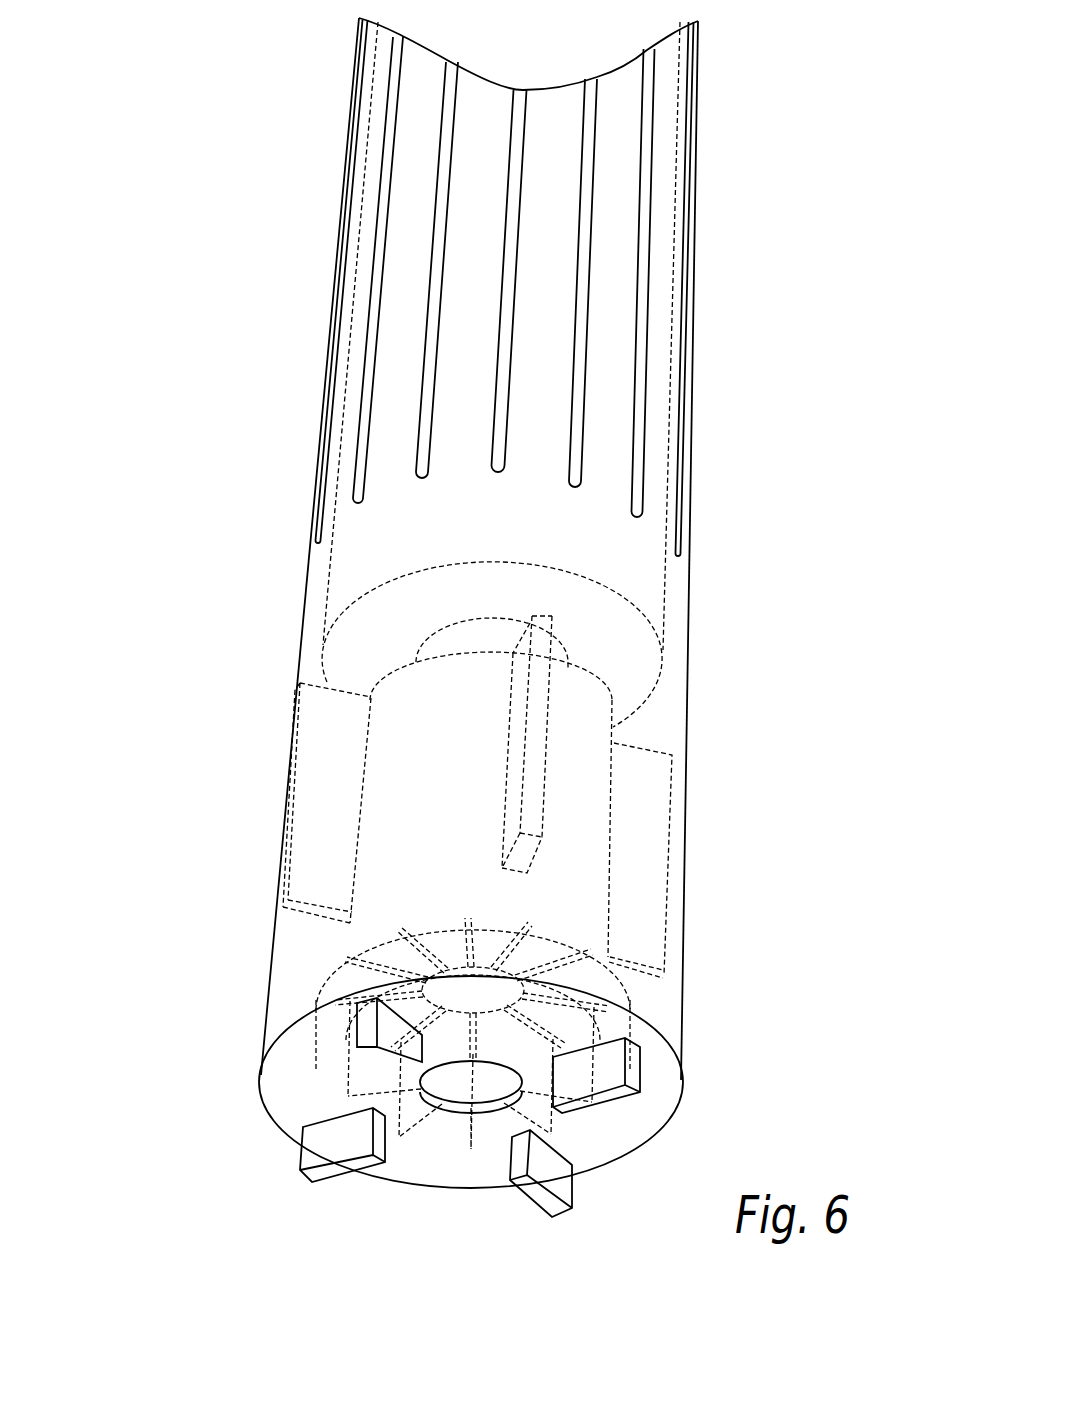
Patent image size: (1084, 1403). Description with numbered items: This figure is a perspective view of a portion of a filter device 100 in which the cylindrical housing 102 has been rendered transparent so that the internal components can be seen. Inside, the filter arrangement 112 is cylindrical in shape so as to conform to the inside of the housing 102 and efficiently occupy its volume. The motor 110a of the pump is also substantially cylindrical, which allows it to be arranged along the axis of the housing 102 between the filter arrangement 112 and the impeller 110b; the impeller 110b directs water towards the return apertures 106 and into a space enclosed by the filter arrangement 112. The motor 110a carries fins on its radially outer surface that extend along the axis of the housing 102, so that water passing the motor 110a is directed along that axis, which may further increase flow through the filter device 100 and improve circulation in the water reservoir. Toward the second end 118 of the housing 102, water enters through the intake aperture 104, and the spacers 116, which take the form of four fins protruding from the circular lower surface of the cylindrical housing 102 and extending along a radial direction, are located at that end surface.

The filter device 100 is at (238, 72).
The housing 102 is at (303, 601).
The intake aperture 104 is at (458, 1106).
The return apertures 106 is at (647, 145).
The motor 110a is at (408, 830).
The impeller 110b is at (348, 978).
The filter arrangement 112 is at (607, 552).
The spacers 116 is at (563, 1188).
The second end 118 is at (735, 998).